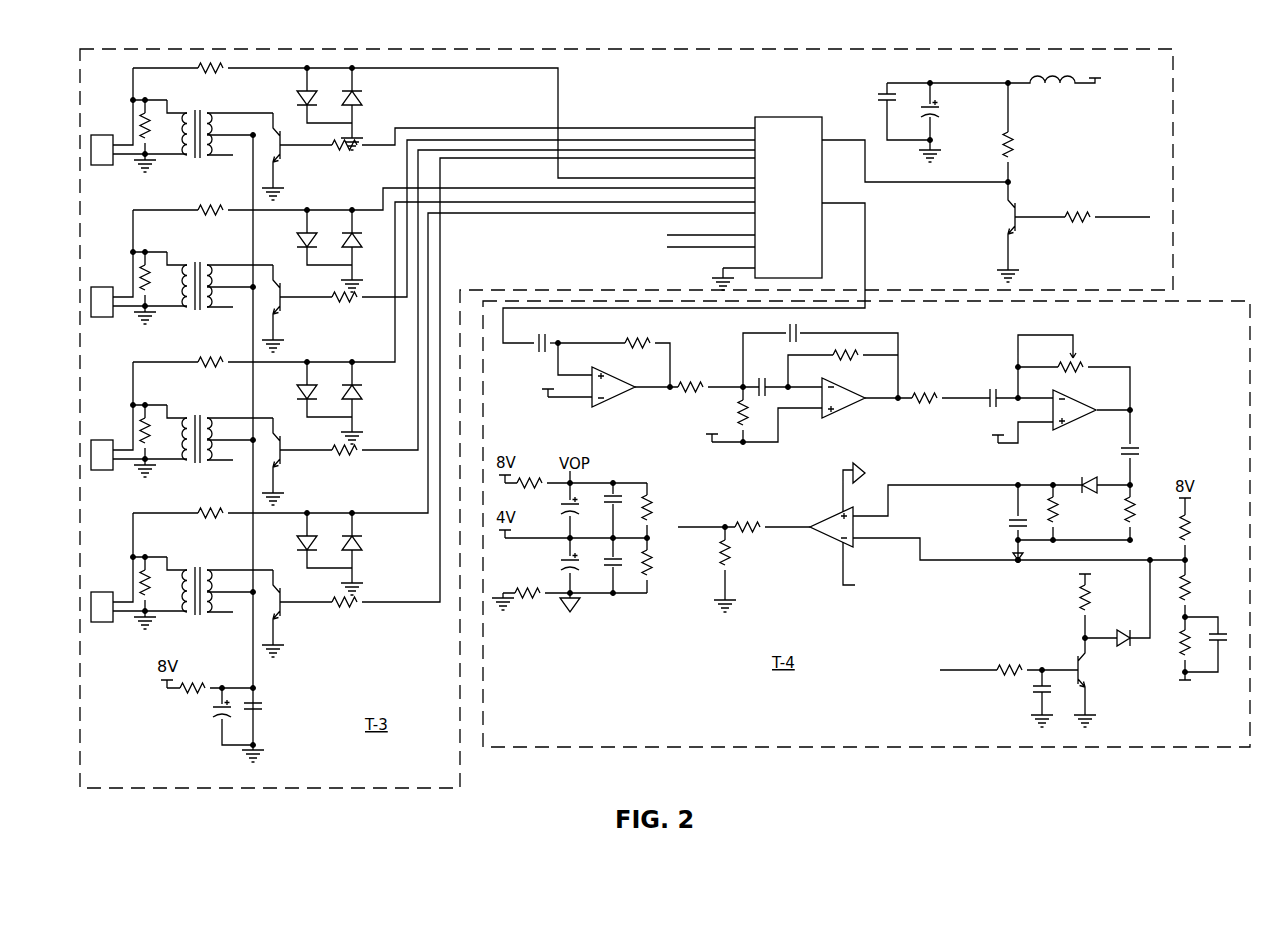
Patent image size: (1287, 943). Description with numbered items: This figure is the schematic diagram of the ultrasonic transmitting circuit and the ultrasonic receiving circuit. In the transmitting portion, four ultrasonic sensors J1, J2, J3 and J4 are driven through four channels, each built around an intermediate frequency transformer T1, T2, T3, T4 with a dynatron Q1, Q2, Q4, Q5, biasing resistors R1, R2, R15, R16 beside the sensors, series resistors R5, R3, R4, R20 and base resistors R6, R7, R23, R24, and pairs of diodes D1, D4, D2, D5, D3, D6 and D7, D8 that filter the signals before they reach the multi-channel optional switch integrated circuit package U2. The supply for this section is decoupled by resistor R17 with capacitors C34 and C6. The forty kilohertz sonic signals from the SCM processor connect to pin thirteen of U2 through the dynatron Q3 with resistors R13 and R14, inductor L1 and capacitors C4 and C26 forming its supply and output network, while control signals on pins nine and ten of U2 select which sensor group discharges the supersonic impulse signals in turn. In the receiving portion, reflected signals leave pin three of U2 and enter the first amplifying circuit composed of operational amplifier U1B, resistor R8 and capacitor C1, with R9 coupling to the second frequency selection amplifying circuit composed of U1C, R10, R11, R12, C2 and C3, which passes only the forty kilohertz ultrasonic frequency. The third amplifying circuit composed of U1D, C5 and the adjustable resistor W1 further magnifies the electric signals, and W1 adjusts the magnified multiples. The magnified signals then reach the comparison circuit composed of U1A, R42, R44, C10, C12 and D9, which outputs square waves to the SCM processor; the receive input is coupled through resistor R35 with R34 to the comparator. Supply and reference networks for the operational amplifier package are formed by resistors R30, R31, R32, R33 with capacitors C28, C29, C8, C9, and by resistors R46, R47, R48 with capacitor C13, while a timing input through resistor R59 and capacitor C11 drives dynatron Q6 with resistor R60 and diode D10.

The ultrasonic sensor J1 is at (138, 116).
The ultrasonic sensor J2 is at (138, 263).
The ultrasonic sensor J3 is at (138, 416).
The ultrasonic sensor J4 is at (138, 567).
The resistor R1 is at (152, 135).
The resistor R2 is at (152, 287).
The resistor R3 is at (444, 201).
The resistor R4 is at (444, 284).
The resistor R5 is at (444, 112).
The resistor R6 is at (543, 150).
The resistor R7 is at (543, 232).
The resistor R8 is at (615, 354).
The resistor R9 is at (711, 377).
The resistor R10 is at (760, 415).
The resistor R11 is at (843, 361).
The resistor R12 is at (951, 388).
The resistor R13 is at (1027, 133).
The resistor R14 is at (1082, 207).
The resistor R15 is at (157, 440).
The resistor R16 is at (157, 592).
The resistor R17 is at (211, 678).
The resistor R20 is at (444, 365).
The resistor R23 is at (543, 314).
The resistor R24 is at (543, 394).
The resistor R30 is at (577, 502).
The resistor R31 is at (569, 591).
The resistor R32 is at (662, 510).
The resistor R33 is at (662, 565).
The resistor R34 is at (737, 569).
The resistor R35 is at (722, 517).
The resistor R42 is at (1068, 512).
The resistor R44 is at (1146, 512).
The resistor R46 is at (1119, 534).
The resistor R47 is at (1201, 589).
The resistor R48 is at (1171, 659).
The resistor R59 is at (989, 659).
The resistor R60 is at (1100, 601).
The capacitor C1 is at (547, 334).
The capacitor C2 is at (766, 377).
The capacitor C3 is at (821, 356).
The capacitor C4 is at (943, 111).
The capacitor C5 is at (1017, 387).
The capacitor C6 is at (262, 729).
The capacitor C8 is at (621, 510).
The capacitor C9 is at (621, 566).
The capacitor C10 is at (1057, 523).
The capacitor C11 is at (1054, 698).
The capacitor C12 is at (1116, 448).
The capacitor C13 is at (1218, 643).
The electrolytic capacitor C26 is at (947, 121).
The electrolytic capacitor C28 is at (583, 510).
The electrolytic capacitor C29 is at (583, 575).
The electrolytic capacitor C34 is at (213, 716).
The diode D1 is at (317, 95).
The diode D2 is at (317, 237).
The diode D3 is at (317, 389).
The diode D4 is at (363, 109).
The diode D5 is at (363, 251).
The diode D6 is at (363, 403).
The diode D7 is at (317, 540).
The diode D8 is at (363, 554).
The diode D9 is at (991, 486).
The diode D10 is at (1116, 603).
The transistor Q1 is at (297, 156).
The transistor Q2 is at (297, 308).
The dynatron Q3 is at (1019, 232).
The transistor Q4 is at (297, 461).
The transistor Q5 is at (297, 613).
The transistor Q6 is at (1069, 676).
The transformer T1 is at (220, 124).
The transformer T2 is at (220, 276).
The transformer T3 is at (220, 429).
The transformer T4 is at (220, 581).
The operational amplifier U1A is at (975, 530).
The operational amplifier U1B is at (605, 375).
The operational amplifier U1C is at (850, 388).
The operational amplifier U1D is at (1057, 406).
The multi-channel optional switch integrated circuit package U2 is at (755, 230).
The inductor L1 is at (1057, 69).
The adjustable resistor W1 is at (1074, 373).